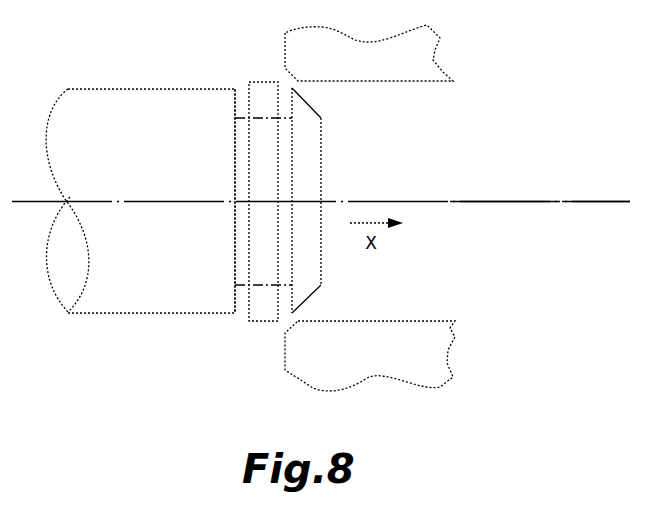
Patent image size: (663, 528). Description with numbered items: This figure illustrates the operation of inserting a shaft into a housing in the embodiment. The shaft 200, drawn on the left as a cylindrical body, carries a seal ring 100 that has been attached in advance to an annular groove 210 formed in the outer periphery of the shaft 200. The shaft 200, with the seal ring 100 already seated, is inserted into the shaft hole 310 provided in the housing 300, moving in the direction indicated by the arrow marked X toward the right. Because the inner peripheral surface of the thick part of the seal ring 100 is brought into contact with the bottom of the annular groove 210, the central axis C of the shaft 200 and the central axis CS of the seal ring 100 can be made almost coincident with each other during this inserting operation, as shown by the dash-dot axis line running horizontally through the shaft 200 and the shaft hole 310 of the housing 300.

The seal ring 100 is at (263, 97).
The shaft 200 is at (140, 201).
The annular groove 210 is at (242, 310).
The housing 300 is at (370, 356).
The shaft hole 310 is at (377, 84).
The central axis of the shaft C is at (503, 201).
The central axis of the seal ring CS is at (553, 200).